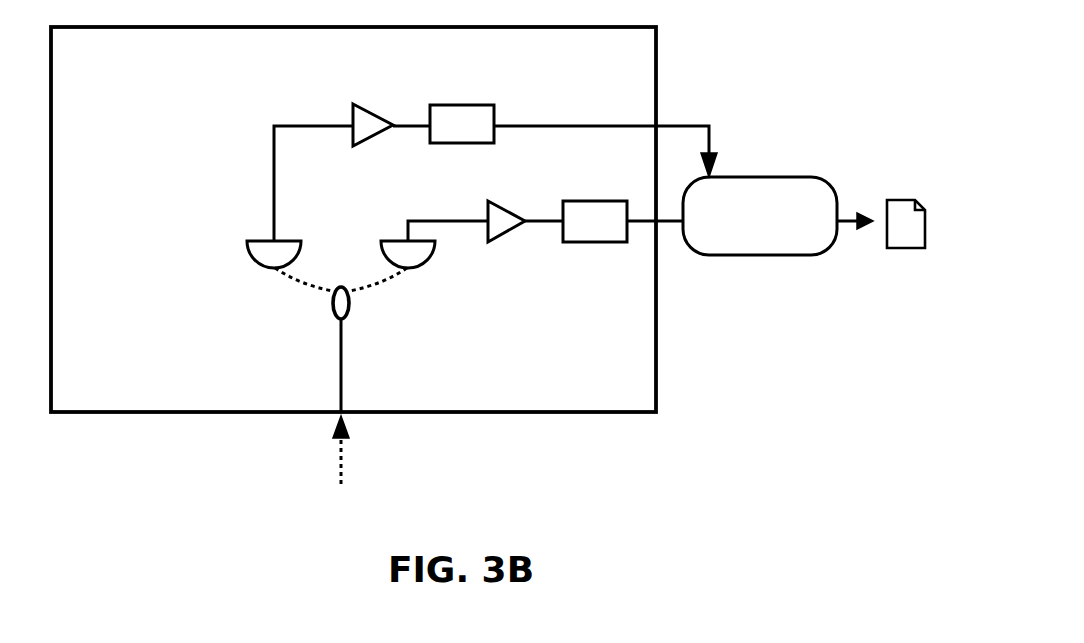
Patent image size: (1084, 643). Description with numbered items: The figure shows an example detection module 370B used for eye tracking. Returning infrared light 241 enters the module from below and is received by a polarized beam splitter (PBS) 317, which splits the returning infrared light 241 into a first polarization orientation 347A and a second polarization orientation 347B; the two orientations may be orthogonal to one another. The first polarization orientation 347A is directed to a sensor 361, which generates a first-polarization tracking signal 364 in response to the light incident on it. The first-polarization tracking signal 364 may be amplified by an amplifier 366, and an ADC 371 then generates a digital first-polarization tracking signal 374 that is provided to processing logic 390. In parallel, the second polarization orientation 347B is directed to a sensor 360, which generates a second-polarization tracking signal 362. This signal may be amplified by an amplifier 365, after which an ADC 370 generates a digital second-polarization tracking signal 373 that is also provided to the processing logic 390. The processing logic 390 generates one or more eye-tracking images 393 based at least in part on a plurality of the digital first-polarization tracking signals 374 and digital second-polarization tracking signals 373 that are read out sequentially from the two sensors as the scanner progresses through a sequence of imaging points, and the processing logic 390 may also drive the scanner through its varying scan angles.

The detection module 370B is at (145, 87).
The sensor 361 is at (258, 240).
The first-polarization tracking signal 364 is at (274, 127).
The amplifier 366 is at (353, 104).
The ADC 371 is at (490, 106).
The digital first-polarization tracking signal 374 is at (695, 125).
The sensor 360 is at (382, 240).
The second-polarization tracking signal 362 is at (408, 221).
The amplifier 365 is at (505, 200).
The ADC 370 is at (583, 243).
The digital second-polarization tracking signal 373 is at (670, 222).
The processing logic 390 is at (808, 230).
The eye-tracking image 393 is at (899, 200).
The polarized beam splitter 317 is at (332, 303).
The first polarization orientation 347A is at (284, 274).
The second polarization orientation 347B is at (399, 276).
The returning infrared light 241 is at (343, 455).